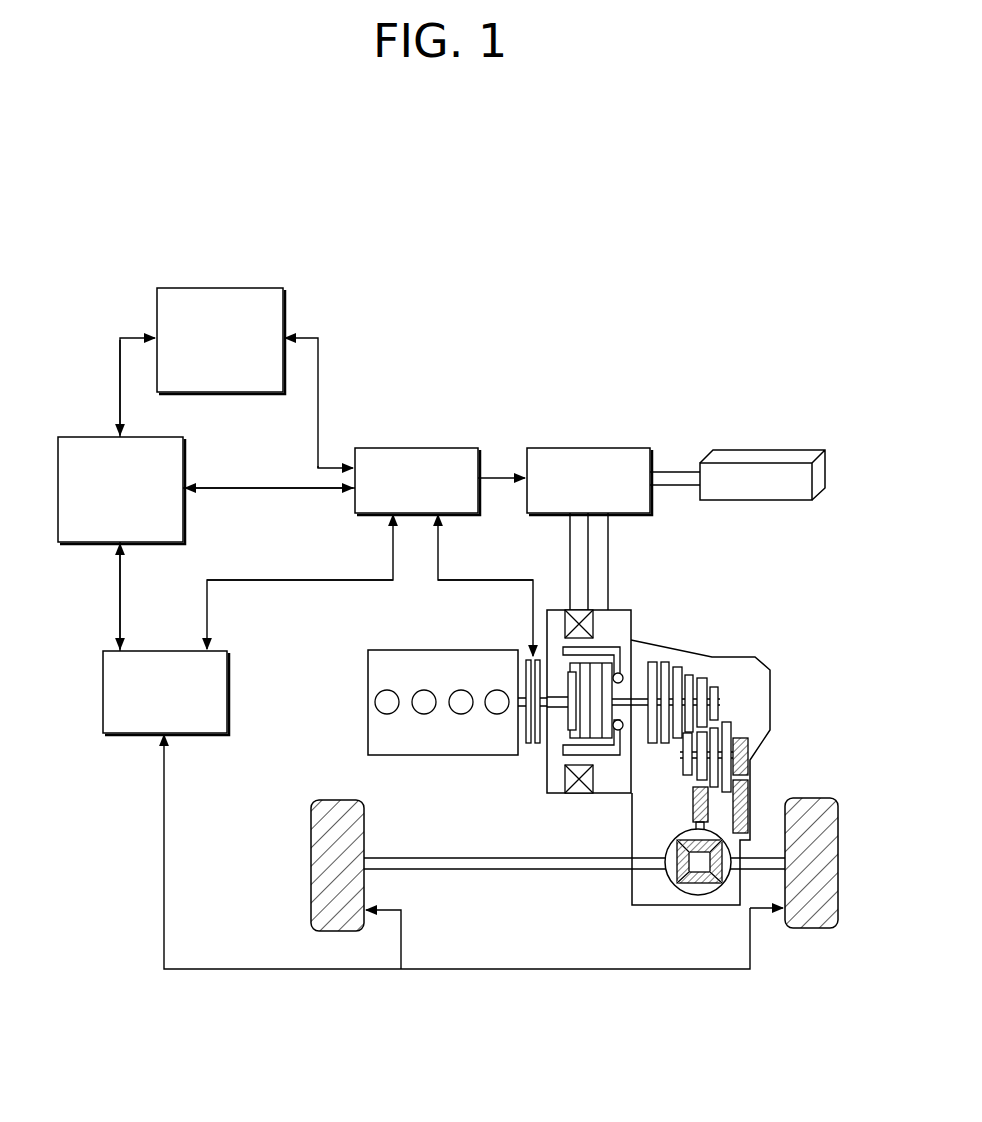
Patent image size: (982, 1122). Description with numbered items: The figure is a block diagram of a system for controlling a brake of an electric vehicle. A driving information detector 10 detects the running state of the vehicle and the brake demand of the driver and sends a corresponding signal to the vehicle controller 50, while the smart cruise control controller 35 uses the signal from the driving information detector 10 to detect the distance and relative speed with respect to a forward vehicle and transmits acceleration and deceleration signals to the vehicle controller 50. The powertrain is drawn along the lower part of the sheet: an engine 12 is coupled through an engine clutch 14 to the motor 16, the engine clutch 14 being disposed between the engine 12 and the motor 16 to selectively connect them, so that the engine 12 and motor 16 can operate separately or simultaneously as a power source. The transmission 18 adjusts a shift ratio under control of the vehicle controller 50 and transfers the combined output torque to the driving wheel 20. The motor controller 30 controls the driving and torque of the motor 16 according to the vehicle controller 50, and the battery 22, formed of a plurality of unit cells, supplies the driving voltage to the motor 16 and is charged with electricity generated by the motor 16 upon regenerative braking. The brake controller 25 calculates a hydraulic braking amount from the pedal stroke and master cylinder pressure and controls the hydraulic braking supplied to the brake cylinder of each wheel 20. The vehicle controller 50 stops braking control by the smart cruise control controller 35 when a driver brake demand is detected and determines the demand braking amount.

The driving information detector 10 is at (216, 288).
The engine 12 is at (368, 701).
The engine clutch 14 is at (527, 745).
The motor 16 is at (632, 612).
The transmission 18 is at (740, 657).
The driving wheel 20 is at (812, 930).
The battery 22 is at (760, 455).
The brake controller 25 is at (123, 735).
The motor controller 30 is at (585, 448).
The smart cruise control controller 35 is at (75, 545).
The vehicle controller 50 is at (413, 448).